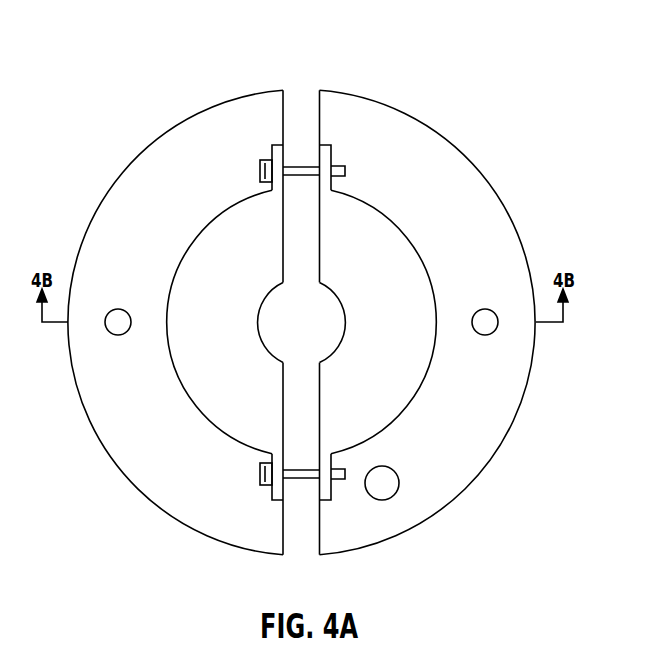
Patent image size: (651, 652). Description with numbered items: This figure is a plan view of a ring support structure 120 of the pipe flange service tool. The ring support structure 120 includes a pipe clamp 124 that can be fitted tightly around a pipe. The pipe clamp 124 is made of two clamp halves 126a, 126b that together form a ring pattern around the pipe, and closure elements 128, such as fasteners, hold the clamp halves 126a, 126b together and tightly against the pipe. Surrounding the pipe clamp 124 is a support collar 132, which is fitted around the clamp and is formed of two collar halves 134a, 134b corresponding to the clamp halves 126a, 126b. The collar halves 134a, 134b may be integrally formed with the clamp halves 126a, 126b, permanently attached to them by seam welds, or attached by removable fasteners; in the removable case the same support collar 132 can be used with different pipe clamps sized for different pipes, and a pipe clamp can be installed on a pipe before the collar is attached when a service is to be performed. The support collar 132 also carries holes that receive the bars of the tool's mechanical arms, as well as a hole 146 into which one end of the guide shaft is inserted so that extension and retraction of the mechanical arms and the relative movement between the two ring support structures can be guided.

The ring support structure 120 is at (353, 78).
The pipe clamp 124 is at (424, 262).
The clamp half 126a is at (212, 392).
The clamp half 126b is at (402, 390).
The closure elements 128 is at (302, 166).
The support collar 132 is at (175, 127).
The collar half 134a is at (192, 517).
The collar half 134b is at (380, 533).
The hole 146 is at (395, 494).